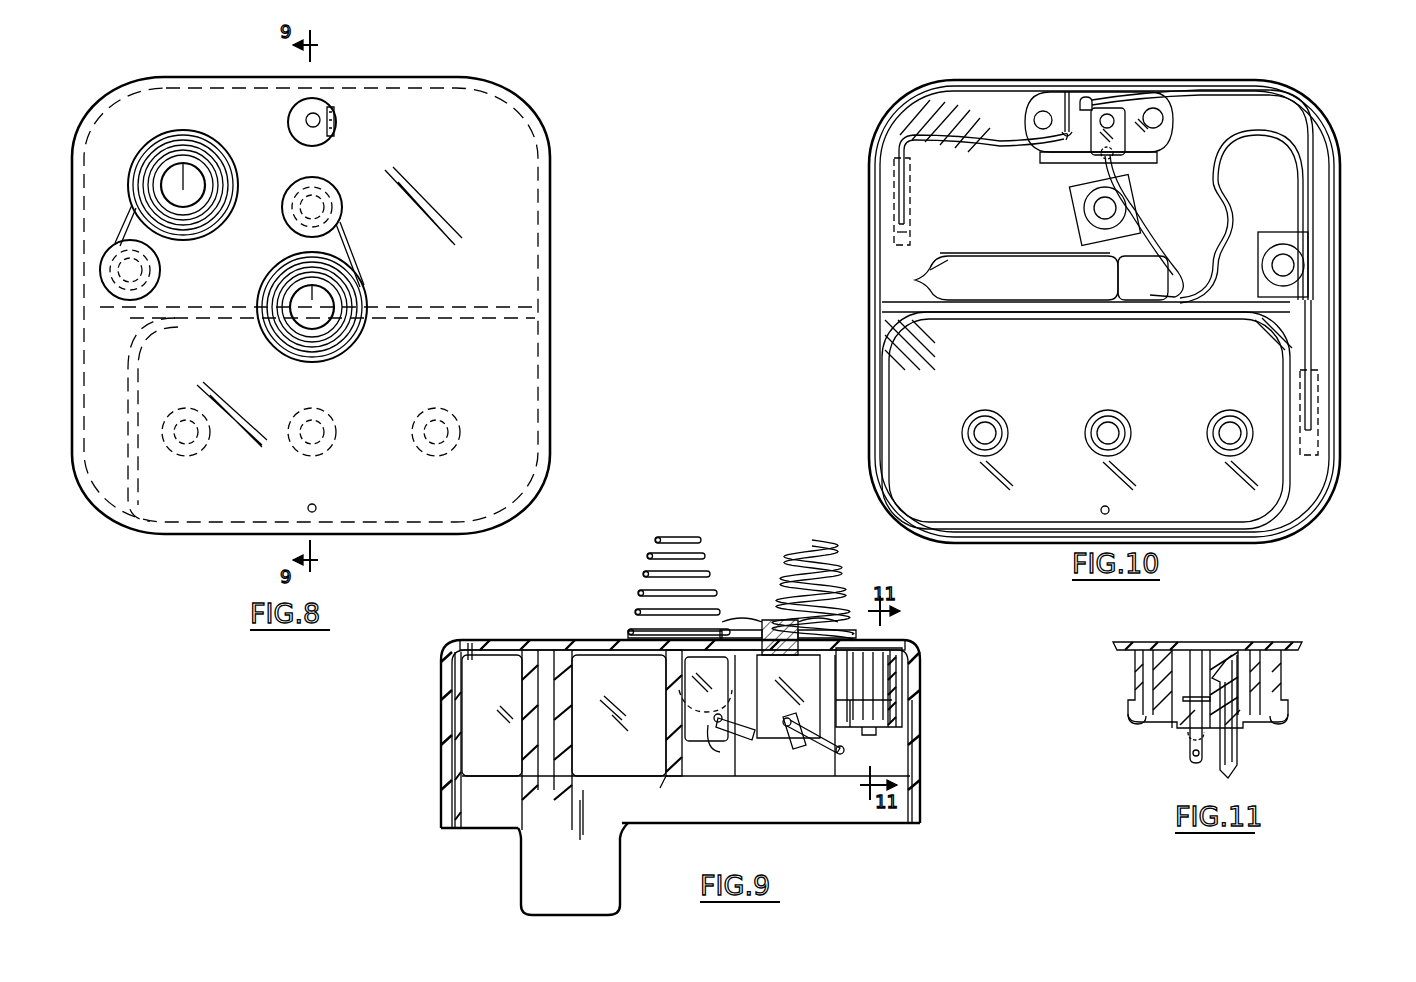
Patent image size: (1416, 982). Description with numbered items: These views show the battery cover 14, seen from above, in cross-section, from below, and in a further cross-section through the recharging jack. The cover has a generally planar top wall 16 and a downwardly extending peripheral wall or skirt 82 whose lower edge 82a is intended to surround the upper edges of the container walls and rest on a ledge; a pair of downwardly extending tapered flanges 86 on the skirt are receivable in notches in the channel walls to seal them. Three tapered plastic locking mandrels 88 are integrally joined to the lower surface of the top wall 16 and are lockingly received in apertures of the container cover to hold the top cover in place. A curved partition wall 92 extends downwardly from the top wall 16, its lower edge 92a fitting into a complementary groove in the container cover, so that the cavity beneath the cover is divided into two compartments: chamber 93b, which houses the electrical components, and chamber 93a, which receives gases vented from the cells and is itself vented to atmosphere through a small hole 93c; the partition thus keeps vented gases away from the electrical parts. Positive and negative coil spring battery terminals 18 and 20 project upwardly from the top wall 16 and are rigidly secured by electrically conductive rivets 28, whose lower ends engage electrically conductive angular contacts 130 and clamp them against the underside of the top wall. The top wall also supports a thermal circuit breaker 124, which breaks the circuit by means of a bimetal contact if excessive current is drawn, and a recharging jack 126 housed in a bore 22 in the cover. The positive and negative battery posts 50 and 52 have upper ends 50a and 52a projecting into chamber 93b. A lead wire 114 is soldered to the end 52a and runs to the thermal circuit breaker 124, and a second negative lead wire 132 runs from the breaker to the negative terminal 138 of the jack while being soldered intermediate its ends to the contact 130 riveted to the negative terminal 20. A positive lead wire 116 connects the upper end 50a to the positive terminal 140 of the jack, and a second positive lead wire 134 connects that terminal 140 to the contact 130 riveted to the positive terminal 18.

In FIG. 8, the battery cover 14 is at (553, 210).
In FIG. 9, the battery cover 14 is at (438, 684).
In FIG. 10, the battery cover 14 is at (866, 428).
In FIG. 8, the top wall 16 is at (528, 337).
In FIG. 9, the top wall 16 is at (560, 645).
In FIG. 10, the top wall 16 is at (962, 100).
In FIG. 11, the top wall 16 is at (1283, 641).
In FIG. 8, the positive coil spring battery terminal 18 is at (178, 140).
In FIG. 9, the positive coil spring battery terminal 18 is at (800, 538).
In FIG. 8, the negative coil spring battery terminal 20 is at (343, 342).
In FIG. 9, the negative coil spring battery terminal 20 is at (675, 538).
In FIG. 8, the bore 22 is at (315, 98).
In FIG. 9, the bore 22 is at (905, 645).
In FIG. 11, the bore 22 is at (1218, 641).
In FIG. 8, the electrically conductive rivets 28 is at (160, 277).
In FIG. 9, the electrically conductive rivets 28 is at (760, 628).
In FIG. 10, the electrically conductive rivets 28 is at (1085, 213).
In FIG. 10, the positive battery post 50 is at (895, 188).
In FIG. 10, the upper end of positive battery post 50a is at (897, 228).
In FIG. 10, the negative battery post 52 is at (1318, 446).
In FIG. 10, the upper end of negative battery post 52a is at (1312, 428).
In FIG. 9, the peripheral wall 82 is at (455, 728).
In FIG. 9, the lower edge of peripheral wall 82a is at (908, 830).
In FIG. 9, the tapered flanges 86 is at (618, 870).
In FIG. 10, the tapered flanges 86 is at (1340, 352).
In FIG. 8, the locking mandrels 88 is at (205, 452).
In FIG. 9, the locking mandrels 88 is at (520, 750).
In FIG. 10, the locking mandrels 88 is at (1083, 437).
In FIG. 8, the curved partition wall 92 is at (463, 298).
In FIG. 9, the curved partition wall 92 is at (665, 743).
In FIG. 10, the curved partition wall 92 is at (1050, 316).
In FIG. 9, the lower edge of partition wall 92a is at (653, 794).
In FIG. 10, the lower edge of partition wall 92a is at (970, 312).
In FIG. 9, the chamber 93a is at (619, 715).
In FIG. 10, the chamber 93a is at (1087, 420).
In FIG. 9, the chamber 93b is at (772, 762).
In FIG. 10, the chamber 93b is at (957, 218).
In FIG. 8, the small hole 93c is at (316, 506).
In FIG. 9, the small hole 93c is at (470, 641).
In FIG. 10, the small hole 93c is at (1110, 509).
In FIG. 10, the lead wire 114 is at (1314, 335).
In FIG. 10, the positive lead wire 116 is at (957, 148).
In FIG. 9, the thermal circuit breaker 124 is at (690, 702).
In FIG. 10, the thermal circuit breaker 124 is at (1041, 276).
In FIG. 9, the recharging jack 126 is at (908, 712).
In FIG. 10, the recharging jack 126 is at (1110, 82).
In FIG. 11, the recharging jack 126 is at (1170, 712).
In FIG. 9, the angular contacts 130 is at (770, 745).
In FIG. 10, the angular contacts 130 is at (1070, 193).
In FIG. 9, the second negative lead wire 132 is at (832, 758).
In FIG. 10, the second negative lead wire 132 is at (1160, 232).
In FIG. 9, the second positive lead wire 134 is at (792, 752).
In FIG. 10, the second positive lead wire 134 is at (1210, 92).
In FIG. 8, the negative terminal of recharging jack 138 is at (305, 118).
In FIG. 9, the negative terminal of recharging jack 138 is at (846, 747).
In FIG. 10, the negative terminal of recharging jack 138 is at (1120, 150).
In FIG. 11, the negative terminal of recharging jack 138 is at (1188, 760).
In FIG. 8, the positive terminal of recharging jack 140 is at (325, 130).
In FIG. 10, the positive terminal of recharging jack 140 is at (1080, 96).
In FIG. 11, the positive terminal of recharging jack 140 is at (1230, 772).